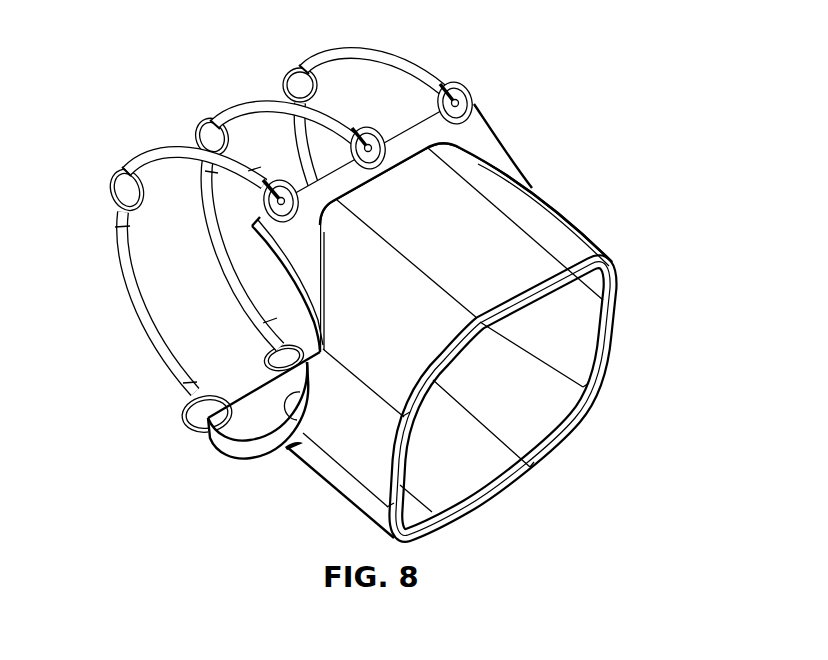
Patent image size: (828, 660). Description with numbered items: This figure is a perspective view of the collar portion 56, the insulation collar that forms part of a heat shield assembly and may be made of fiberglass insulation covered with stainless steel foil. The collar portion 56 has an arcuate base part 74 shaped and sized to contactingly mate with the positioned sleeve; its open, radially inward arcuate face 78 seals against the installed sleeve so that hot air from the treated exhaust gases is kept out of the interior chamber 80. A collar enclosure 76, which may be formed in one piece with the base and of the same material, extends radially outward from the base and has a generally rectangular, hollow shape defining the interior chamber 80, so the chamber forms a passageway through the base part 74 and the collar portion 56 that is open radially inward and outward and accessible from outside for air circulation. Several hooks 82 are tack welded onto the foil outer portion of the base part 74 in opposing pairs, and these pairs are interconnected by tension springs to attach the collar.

The collar portion 56 is at (477, 340).
The arcuate base part 74 is at (490, 139).
The collar enclosure 76 is at (588, 418).
The radially inward arcuate face 78 is at (247, 418).
The interior chamber 80 is at (510, 427).
The hooks 82 is at (380, 140).